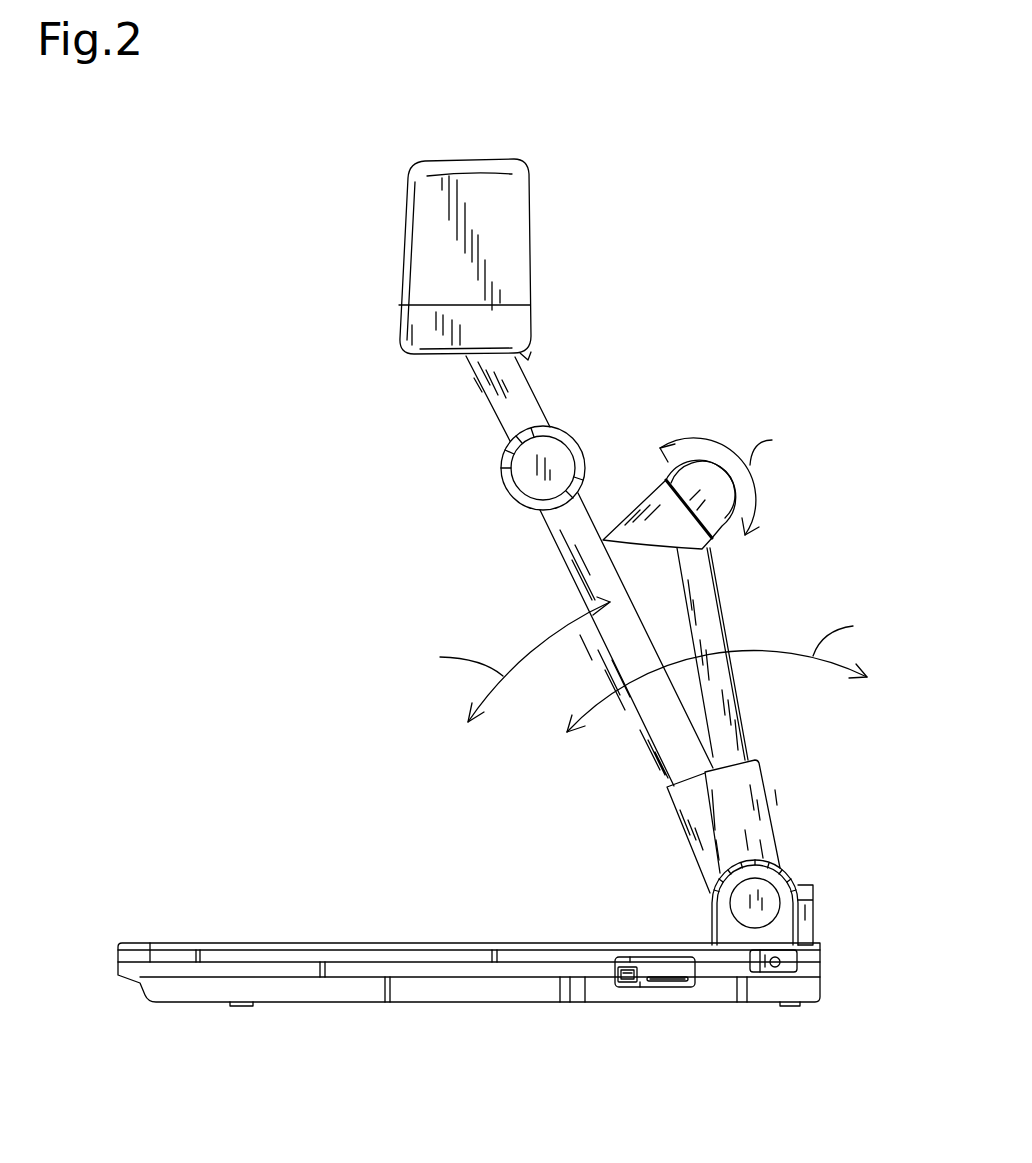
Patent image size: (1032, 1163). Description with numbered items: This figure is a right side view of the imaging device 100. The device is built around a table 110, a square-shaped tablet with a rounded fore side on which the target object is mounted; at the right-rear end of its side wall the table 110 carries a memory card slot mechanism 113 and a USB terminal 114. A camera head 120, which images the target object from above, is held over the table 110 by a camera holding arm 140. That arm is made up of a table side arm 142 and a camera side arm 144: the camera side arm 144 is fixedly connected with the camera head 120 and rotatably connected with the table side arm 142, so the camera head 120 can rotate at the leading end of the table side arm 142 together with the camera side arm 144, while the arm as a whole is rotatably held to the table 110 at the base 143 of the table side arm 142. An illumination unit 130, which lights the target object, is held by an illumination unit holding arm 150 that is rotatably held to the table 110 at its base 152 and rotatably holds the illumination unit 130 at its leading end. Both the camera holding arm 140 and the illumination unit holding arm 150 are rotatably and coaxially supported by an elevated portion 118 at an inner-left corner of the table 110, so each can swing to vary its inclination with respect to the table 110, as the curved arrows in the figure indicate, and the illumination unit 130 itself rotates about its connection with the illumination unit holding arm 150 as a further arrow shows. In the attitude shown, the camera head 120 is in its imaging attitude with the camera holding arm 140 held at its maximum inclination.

The imaging device 100 is at (207, 417).
The table 110 is at (257, 943).
The memory card slot mechanism 113 is at (667, 981).
The USB terminal 114 is at (623, 987).
The elevated portion 118 is at (788, 875).
The camera head 120 is at (420, 262).
The illumination unit 130 is at (717, 518).
The camera holding arm 140 is at (336, 477).
The table side arm 142 is at (567, 530).
The base of the table side arm 143 is at (690, 832).
The camera side arm 144 is at (503, 400).
The illumination unit holding arm 150 is at (732, 712).
The base of the illumination unit holding arm 152 is at (753, 817).